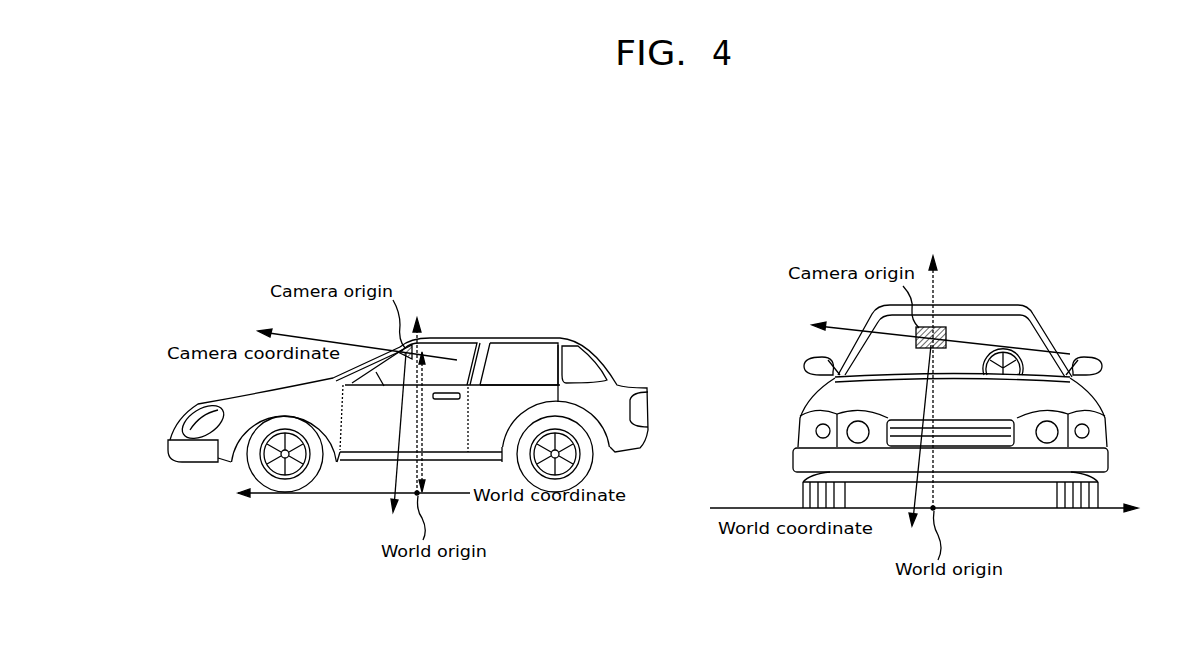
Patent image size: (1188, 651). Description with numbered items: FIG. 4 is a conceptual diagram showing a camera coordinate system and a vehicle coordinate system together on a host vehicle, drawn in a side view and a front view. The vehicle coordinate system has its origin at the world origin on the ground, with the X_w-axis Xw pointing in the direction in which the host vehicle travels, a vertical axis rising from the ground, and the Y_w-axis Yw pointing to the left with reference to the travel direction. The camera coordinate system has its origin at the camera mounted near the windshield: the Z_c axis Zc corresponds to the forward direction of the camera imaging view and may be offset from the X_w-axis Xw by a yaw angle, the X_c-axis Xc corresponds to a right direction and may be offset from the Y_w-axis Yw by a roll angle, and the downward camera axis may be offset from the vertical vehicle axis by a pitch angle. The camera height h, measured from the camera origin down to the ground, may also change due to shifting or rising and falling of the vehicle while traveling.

The X_w-axis Xw is at (343, 495).
The Y_w-axis Yw is at (936, 512).
The Z_c axis Zc is at (344, 341).
The X_c-axis Xc is at (929, 336).
The camera height h is at (428, 422).